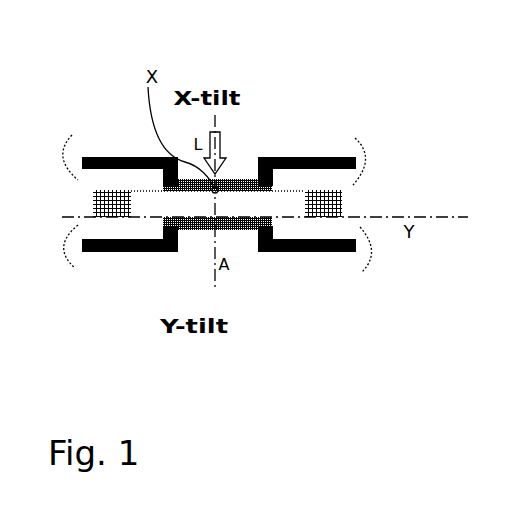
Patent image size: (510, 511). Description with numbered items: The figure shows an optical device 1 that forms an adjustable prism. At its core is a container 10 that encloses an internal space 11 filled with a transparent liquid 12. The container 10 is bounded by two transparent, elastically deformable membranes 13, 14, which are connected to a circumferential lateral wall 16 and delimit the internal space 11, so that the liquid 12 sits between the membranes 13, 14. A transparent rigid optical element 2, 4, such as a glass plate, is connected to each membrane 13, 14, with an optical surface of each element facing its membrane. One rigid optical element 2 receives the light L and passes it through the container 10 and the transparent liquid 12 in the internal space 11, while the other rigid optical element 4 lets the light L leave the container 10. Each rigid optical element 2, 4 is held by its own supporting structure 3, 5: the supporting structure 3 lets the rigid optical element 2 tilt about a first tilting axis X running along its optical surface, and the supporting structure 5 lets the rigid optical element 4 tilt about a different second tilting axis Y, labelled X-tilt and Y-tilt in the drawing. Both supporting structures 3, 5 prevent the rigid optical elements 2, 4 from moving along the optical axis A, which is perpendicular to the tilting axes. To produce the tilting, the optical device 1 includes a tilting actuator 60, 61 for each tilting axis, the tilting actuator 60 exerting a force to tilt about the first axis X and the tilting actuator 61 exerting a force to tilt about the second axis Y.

The optical device 1 is at (96, 108).
The transparent rigid optical element 2 is at (243, 188).
The supporting structure 3 is at (335, 157).
The transparent rigid optical element 4 is at (243, 229).
The supporting structure 5 is at (328, 252).
The container 10 is at (95, 205).
The internal space 11 is at (290, 203).
The transparent liquid 12 is at (197, 203).
The membrane 13 is at (143, 190).
The membrane 14 is at (140, 228).
The circumferential lateral wall 16 is at (337, 207).
The tilting actuator 60 is at (365, 155).
The tilting actuator 61 is at (372, 257).